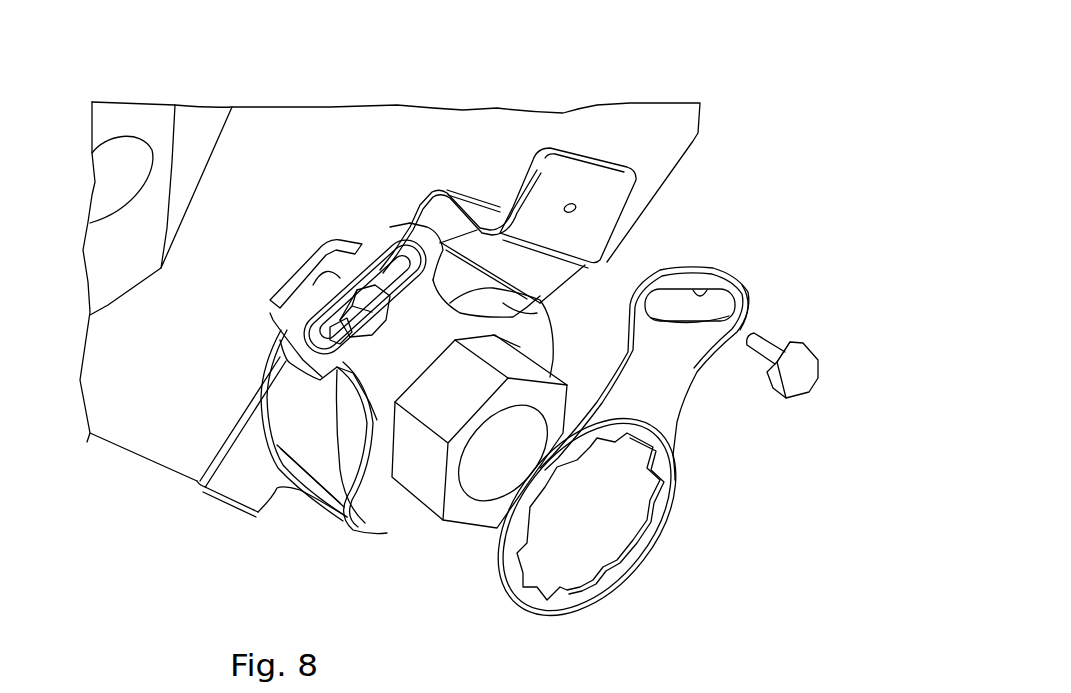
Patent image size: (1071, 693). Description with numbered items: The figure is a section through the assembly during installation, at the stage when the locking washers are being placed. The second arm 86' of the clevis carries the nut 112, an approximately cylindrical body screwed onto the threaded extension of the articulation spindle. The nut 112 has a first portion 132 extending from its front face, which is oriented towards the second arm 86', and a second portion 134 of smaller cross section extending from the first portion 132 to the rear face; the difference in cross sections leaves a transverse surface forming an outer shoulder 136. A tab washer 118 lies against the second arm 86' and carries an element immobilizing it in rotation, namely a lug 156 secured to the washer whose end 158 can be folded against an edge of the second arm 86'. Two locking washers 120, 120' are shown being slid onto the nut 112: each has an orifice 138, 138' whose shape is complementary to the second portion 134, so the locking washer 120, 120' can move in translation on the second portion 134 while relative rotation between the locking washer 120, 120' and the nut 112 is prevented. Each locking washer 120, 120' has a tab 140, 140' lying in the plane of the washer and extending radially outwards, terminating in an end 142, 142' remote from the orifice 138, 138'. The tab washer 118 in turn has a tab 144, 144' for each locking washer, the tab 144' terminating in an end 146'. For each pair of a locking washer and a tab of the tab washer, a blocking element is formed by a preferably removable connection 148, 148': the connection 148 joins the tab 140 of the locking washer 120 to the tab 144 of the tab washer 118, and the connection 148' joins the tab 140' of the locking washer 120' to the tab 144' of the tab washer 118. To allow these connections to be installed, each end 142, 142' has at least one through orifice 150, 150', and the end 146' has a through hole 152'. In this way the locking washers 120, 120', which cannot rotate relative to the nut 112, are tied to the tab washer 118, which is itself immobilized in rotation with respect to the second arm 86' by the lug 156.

The second arm 86' is at (366, 311).
The nut 112 is at (323, 482).
The tab washer 118 is at (248, 462).
The locking washer 120 is at (361, 496).
The first portion 132 is at (453, 270).
The second portion 134 is at (527, 367).
The outer shoulder 136 is at (565, 325).
The orifice 138 is at (479, 486).
The tab 140 is at (315, 271).
The end 142 is at (316, 250).
The tab 144 is at (266, 320).
The connection 148 is at (302, 291).
The through orifice 150 is at (299, 321).
The lug 156 is at (233, 473).
The end 158 is at (175, 477).
The tab 144' is at (486, 152).
The end 146' is at (626, 161).
The through hole 152' is at (618, 114).
The tab 140' is at (656, 369).
The end 142' is at (786, 292).
The through orifice 150' is at (724, 269).
The orifice 138' is at (587, 517).
The locking washer 120' is at (722, 486).
The connection 148' is at (805, 388).